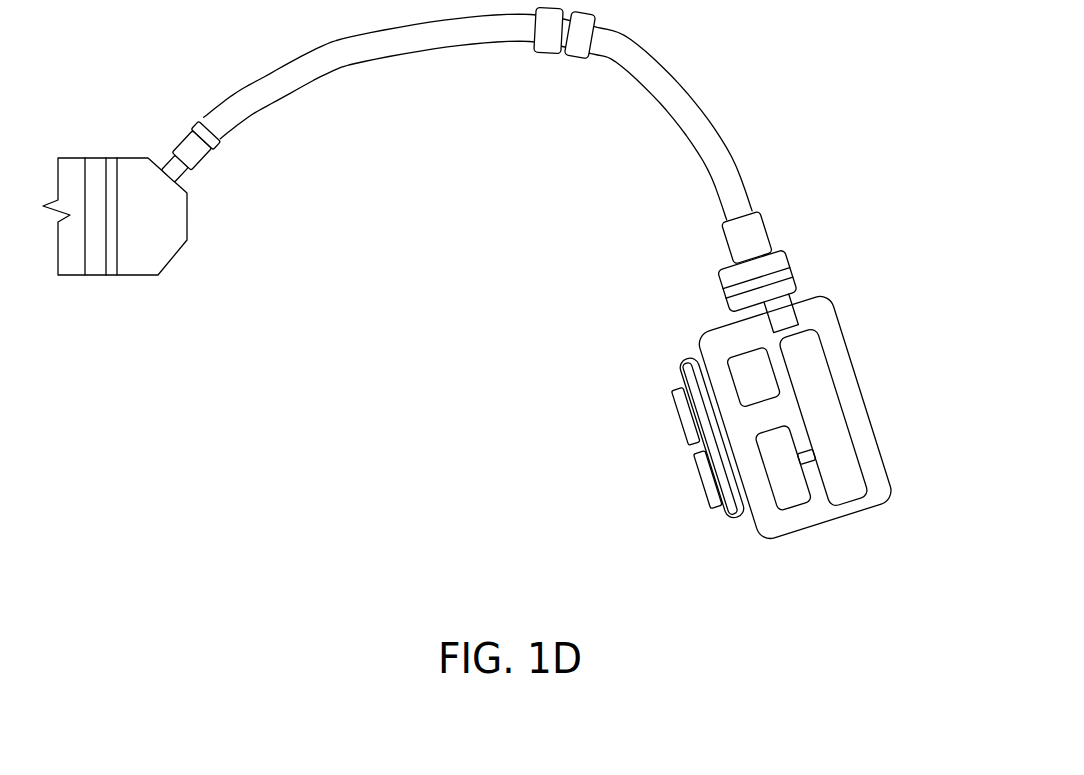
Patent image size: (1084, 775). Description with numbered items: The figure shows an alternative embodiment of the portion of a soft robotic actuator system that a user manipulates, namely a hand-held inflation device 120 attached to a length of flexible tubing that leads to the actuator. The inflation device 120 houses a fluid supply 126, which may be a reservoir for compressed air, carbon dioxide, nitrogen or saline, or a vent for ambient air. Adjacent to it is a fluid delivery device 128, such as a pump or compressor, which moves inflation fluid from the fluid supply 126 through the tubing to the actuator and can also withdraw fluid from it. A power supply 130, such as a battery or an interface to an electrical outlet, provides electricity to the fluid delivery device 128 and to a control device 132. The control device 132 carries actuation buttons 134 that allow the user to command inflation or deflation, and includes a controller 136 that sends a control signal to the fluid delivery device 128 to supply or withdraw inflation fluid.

The inflation device 120 is at (721, 459).
The fluid supply 126 is at (820, 385).
The fluid delivery device 128 is at (780, 505).
The power supply 130 is at (748, 365).
The control device 132 is at (730, 523).
The actuation buttons 134 is at (676, 405).
The controller 136 is at (690, 370).